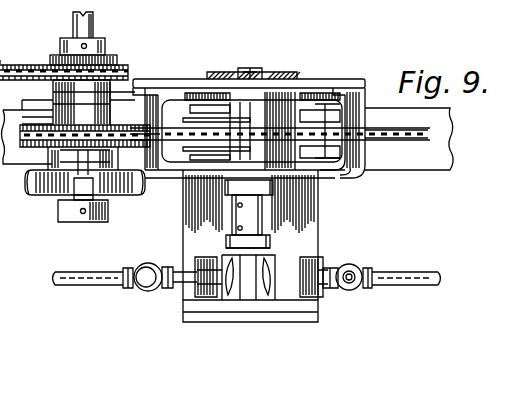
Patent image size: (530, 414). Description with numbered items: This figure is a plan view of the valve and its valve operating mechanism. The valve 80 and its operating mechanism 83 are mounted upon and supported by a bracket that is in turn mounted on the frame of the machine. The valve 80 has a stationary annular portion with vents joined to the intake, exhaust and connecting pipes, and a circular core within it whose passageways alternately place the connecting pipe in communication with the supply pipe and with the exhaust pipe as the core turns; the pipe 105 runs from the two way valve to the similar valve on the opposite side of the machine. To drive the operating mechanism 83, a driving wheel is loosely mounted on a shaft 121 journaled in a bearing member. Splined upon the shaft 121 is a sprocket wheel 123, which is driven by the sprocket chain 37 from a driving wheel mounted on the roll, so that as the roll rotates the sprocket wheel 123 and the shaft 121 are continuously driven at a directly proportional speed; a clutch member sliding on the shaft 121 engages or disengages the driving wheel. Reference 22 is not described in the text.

The shaft 121 is at (95, 18).
The sprocket wheel 123 is at (125, 66).
The operating mechanism 83 is at (265, 95).
The valve 80 is at (272, 253).
The pipe 105 is at (81, 272).
The bearing 22 is at (52, 96).
The sprocket chain 37 is at (4, 64).